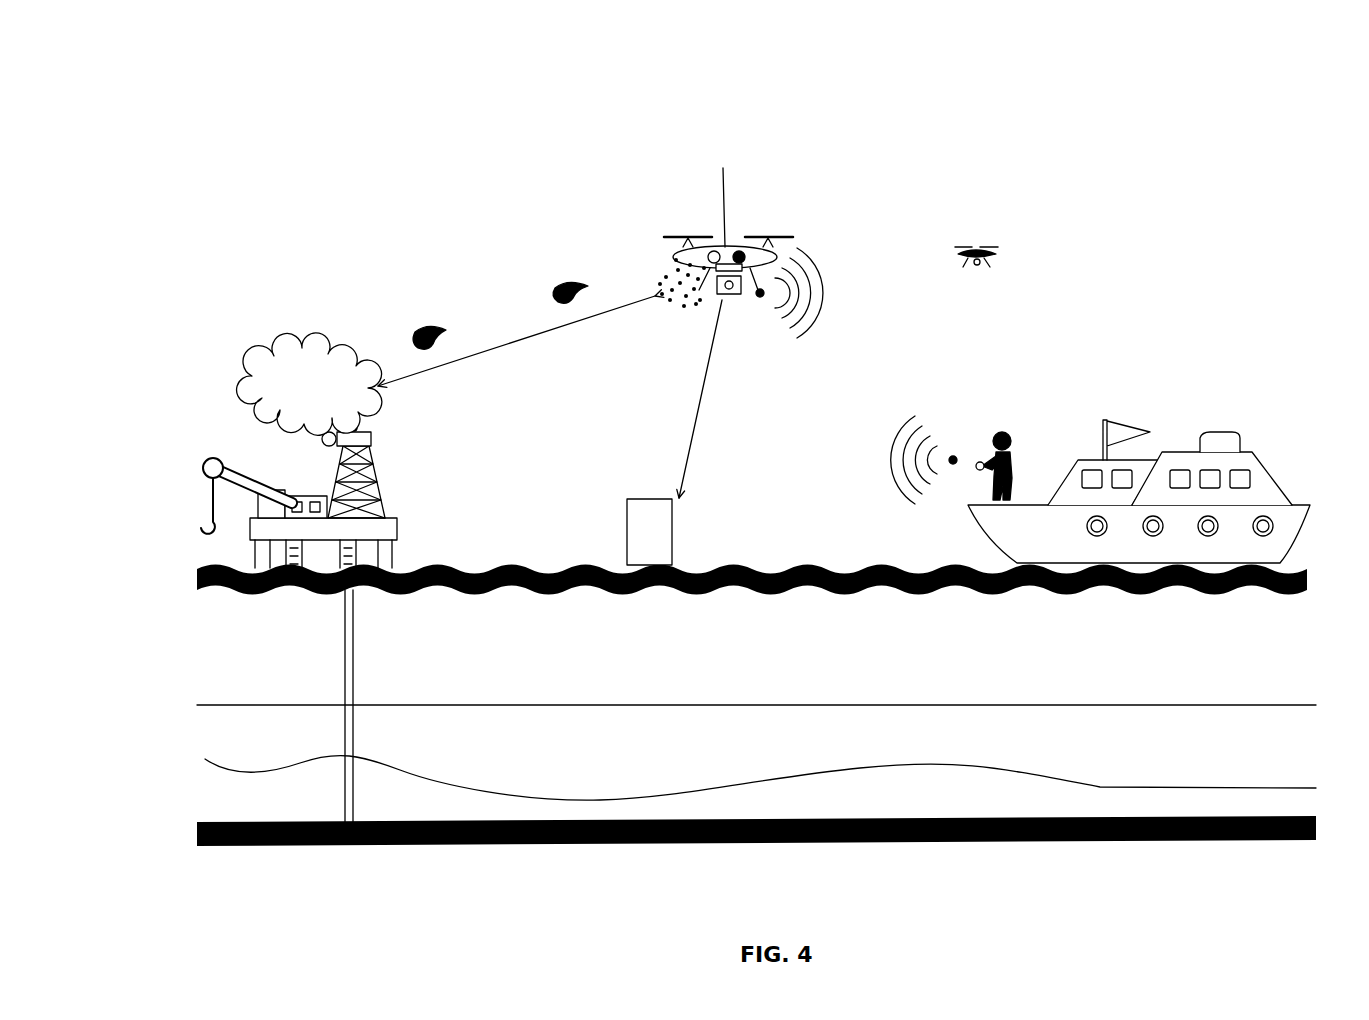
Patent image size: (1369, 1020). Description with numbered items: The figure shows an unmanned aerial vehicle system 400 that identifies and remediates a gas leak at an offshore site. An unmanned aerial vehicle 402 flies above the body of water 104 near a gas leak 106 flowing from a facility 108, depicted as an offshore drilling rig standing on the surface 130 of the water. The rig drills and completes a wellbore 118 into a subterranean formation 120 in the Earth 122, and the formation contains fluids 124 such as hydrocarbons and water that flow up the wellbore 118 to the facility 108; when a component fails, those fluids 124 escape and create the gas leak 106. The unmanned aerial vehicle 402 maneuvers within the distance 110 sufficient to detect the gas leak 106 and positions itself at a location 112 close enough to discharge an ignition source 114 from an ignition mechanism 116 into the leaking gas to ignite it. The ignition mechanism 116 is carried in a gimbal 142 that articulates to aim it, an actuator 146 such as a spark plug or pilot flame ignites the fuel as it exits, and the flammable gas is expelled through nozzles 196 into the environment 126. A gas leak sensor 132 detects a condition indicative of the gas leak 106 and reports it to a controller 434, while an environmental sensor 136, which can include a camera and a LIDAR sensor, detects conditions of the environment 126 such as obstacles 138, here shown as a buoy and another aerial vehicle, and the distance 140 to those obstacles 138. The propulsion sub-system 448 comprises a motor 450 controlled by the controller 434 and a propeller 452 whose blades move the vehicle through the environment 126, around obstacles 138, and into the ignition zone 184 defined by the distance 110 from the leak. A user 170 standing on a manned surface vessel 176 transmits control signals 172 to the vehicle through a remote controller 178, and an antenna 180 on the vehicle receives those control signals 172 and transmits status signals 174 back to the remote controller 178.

The unmanned aerial vehicle system 400 is at (1248, 66).
The unmanned aerial vehicle 402 is at (725, 260).
The body of water 104 is at (898, 542).
The gas leak 106 is at (246, 348).
The facility 108 is at (232, 442).
The distance 110 is at (541, 340).
The location 112 is at (725, 260).
The ignition source 114 is at (418, 338).
The ignition mechanism 116 is at (608, 272).
The wellbore 118 is at (354, 678).
The subterranean formation 120 is at (251, 798).
The Earth 122 is at (198, 731).
The fluids 124 is at (194, 831).
The environment 126 is at (482, 406).
The surface 130 is at (838, 566).
The gas leak sensor 132 is at (739, 250).
The environmental sensor 136 is at (716, 250).
The obstacles 138 is at (627, 540).
The distance 140 is at (693, 440).
The gimbal 142 is at (694, 305).
The actuator 146 is at (668, 302).
The user 170 is at (1002, 431).
The control signals 172 is at (893, 458).
The status signals 174 is at (820, 300).
The manned surface vessel 176 is at (1170, 412).
The remote controller 178 is at (978, 466).
The antenna 180 is at (760, 300).
The ignition zone 184 is at (590, 212).
The nozzles 196 is at (660, 281).
The controller 434 is at (724, 178).
The propulsion sub-system 448 is at (782, 222).
The motor 450 is at (782, 253).
The propeller 452 is at (796, 237).